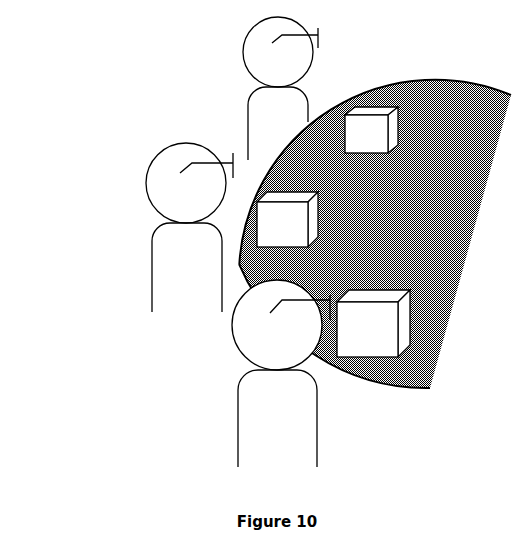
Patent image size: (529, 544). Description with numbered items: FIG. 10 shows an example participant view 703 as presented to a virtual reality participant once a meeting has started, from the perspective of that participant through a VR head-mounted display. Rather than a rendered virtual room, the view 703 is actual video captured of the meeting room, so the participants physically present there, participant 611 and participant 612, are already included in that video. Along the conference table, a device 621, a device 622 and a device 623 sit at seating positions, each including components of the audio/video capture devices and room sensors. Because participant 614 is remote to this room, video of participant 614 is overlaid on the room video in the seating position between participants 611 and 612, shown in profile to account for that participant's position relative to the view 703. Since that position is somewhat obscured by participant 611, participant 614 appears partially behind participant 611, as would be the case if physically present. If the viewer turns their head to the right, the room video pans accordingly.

The view 703 is at (44, 43).
The participant 611 is at (262, 413).
The participant 612 is at (263, 122).
The participant 614 is at (171, 263).
The device 621 is at (343, 338).
The device 622 is at (267, 232).
The device 623 is at (351, 141).